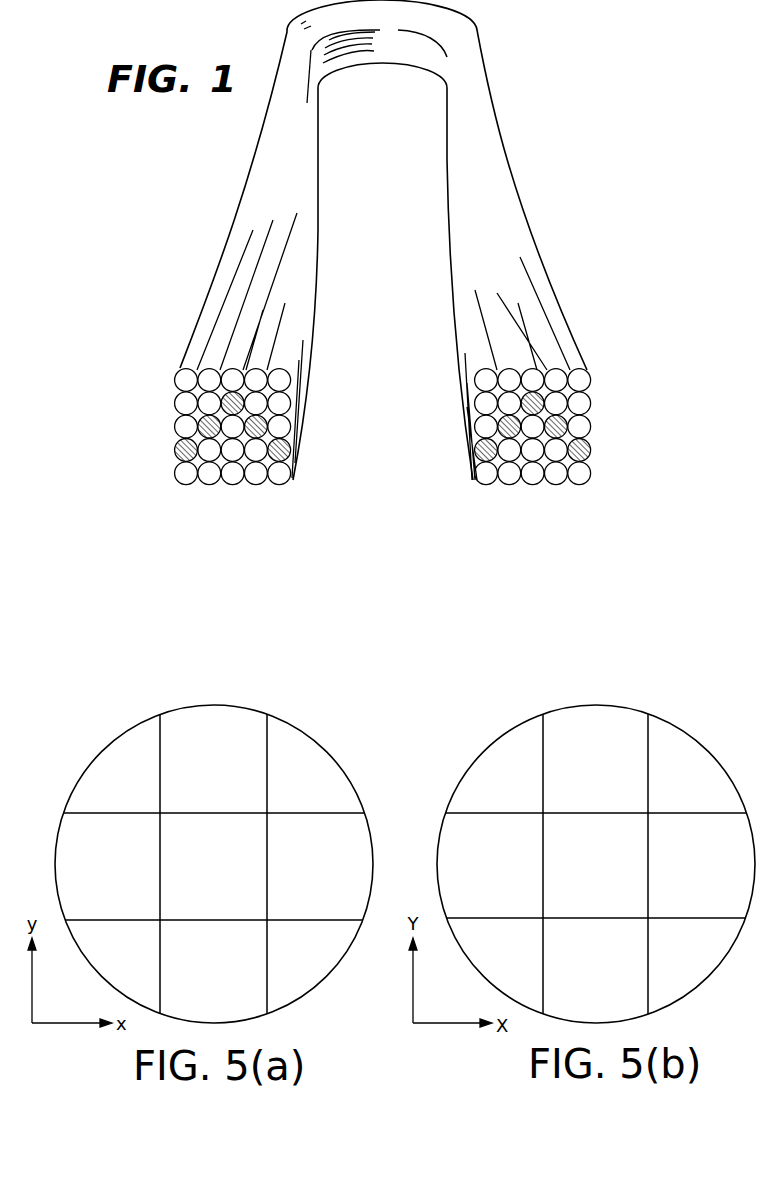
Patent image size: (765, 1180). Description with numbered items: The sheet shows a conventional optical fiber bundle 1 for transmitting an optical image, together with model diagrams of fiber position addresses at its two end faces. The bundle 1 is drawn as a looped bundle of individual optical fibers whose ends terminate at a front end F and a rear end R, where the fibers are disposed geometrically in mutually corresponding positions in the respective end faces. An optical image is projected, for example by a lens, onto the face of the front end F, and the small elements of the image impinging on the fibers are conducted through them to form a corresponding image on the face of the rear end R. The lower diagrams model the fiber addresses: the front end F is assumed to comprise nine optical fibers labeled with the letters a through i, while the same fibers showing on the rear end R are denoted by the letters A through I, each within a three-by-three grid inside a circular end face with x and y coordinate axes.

In FIG. 1, the optical fiber bundle 1 is at (485, 66).
In FIG. 1, the front end of the optical fiber bundle F is at (300, 492).
The front end of the optical fiber bundle F is at (245, 706).
In FIG. 1, the rear end of the optical fiber bundle R is at (468, 492).
The rear end of the optical fiber bundle R is at (630, 707).